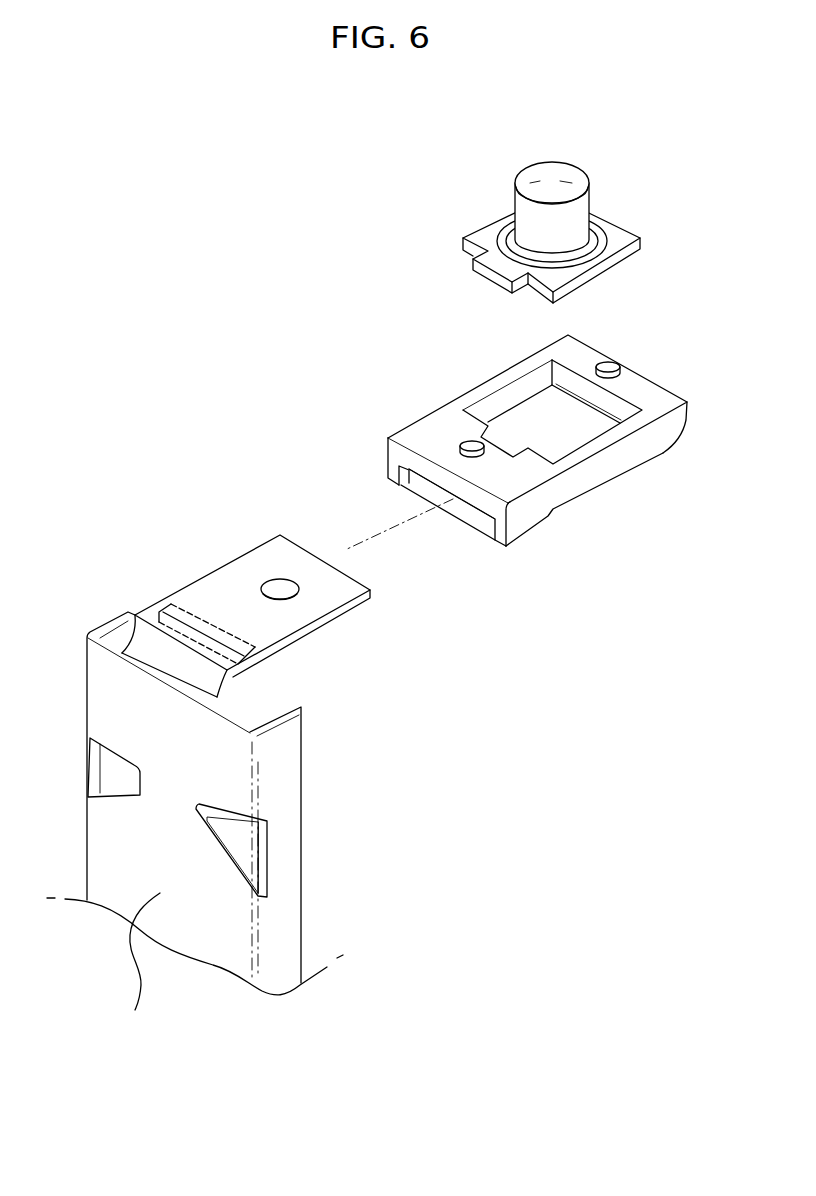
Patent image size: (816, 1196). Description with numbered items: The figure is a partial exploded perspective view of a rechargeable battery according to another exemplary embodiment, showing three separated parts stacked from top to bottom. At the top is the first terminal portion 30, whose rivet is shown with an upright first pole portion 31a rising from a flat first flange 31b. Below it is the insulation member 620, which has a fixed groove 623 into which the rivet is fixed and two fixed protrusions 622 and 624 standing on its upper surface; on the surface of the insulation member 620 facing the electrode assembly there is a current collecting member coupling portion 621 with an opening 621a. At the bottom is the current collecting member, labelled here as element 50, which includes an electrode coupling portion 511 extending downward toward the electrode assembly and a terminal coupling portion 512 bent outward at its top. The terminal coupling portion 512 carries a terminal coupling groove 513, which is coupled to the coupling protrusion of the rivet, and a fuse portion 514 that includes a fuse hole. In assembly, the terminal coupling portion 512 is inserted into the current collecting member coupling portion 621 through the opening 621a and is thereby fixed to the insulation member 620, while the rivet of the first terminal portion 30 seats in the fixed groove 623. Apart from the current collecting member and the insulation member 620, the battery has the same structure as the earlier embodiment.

The first terminal portion 30 is at (553, 209).
The first pole portion 31a is at (580, 213).
The first flange 31b is at (618, 233).
The bracket 50 is at (228, 763).
The electrode coupling portion 511 is at (135, 1010).
The terminal coupling portion 512 is at (250, 567).
The terminal coupling groove 513 is at (298, 584).
The fuse portion 514 is at (157, 610).
The insulation member 620 is at (511, 467).
The current collecting member coupling portion 621 is at (513, 554).
The opening 621a is at (437, 487).
The fixed protrusion 622 is at (470, 443).
The fixed groove 623 is at (507, 403).
The fixed protrusion 624 is at (609, 366).